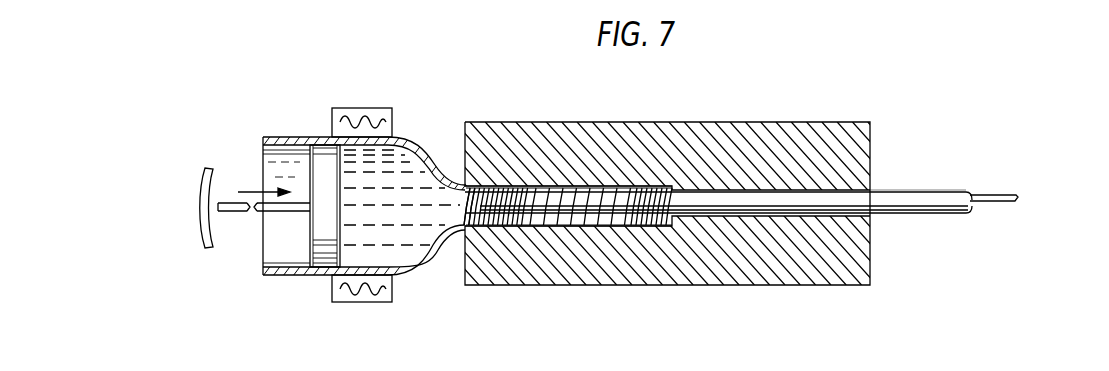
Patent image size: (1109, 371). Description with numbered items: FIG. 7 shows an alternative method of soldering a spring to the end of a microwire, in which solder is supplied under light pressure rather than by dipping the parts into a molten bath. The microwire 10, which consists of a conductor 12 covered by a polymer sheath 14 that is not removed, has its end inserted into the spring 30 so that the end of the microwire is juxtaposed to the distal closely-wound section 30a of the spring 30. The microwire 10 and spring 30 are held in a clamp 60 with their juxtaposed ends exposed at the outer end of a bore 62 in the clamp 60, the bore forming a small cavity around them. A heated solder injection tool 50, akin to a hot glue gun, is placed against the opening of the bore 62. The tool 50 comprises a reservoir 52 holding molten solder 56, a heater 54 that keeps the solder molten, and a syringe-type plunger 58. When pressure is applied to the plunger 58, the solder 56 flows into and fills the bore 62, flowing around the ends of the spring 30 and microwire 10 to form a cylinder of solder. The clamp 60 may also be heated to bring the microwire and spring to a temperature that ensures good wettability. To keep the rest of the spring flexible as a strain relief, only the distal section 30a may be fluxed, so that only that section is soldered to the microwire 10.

The microwire 10 is at (914, 155).
The conductor 12 is at (988, 195).
The polymer sheath 14 is at (907, 215).
The spring 30 is at (580, 230).
The distal closely-wound section 30a is at (500, 230).
The heated solder injection tool 50 is at (279, 98).
The reservoir 52 is at (410, 277).
The heater 54 is at (378, 108).
The solder 56 is at (405, 170).
The syringe-type plunger 58 is at (313, 250).
The clamp 60 is at (755, 122).
The bore 62 is at (597, 197).